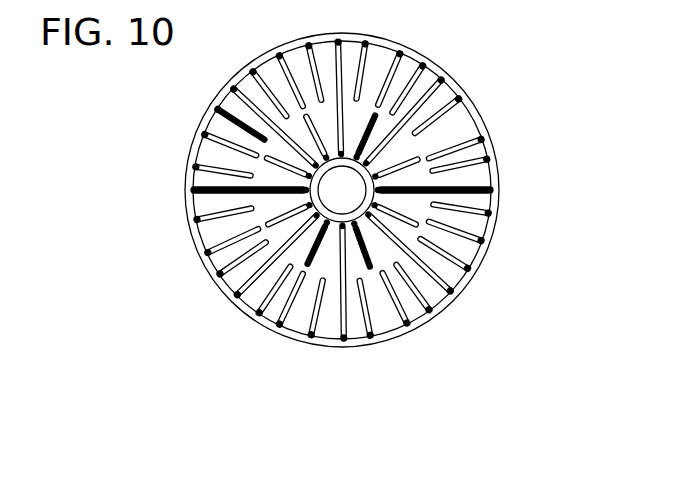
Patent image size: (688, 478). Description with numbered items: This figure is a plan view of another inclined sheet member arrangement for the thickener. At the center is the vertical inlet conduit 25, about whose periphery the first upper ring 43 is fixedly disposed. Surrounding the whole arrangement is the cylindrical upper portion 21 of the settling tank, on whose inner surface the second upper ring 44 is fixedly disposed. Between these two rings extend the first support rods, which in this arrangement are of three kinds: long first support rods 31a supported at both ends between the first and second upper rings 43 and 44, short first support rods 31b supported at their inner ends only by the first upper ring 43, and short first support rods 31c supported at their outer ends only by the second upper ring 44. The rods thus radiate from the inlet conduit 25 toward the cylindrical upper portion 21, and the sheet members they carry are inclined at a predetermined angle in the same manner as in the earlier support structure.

The cylindrical upper portion 21 is at (500, 203).
The vertical inlet conduit 25 is at (393, 153).
The slot 31a is at (268, 230).
The slot 31b is at (317, 265).
The slot 31c is at (472, 257).
The first upper ring 43 is at (384, 292).
The second upper ring 44 is at (186, 180).